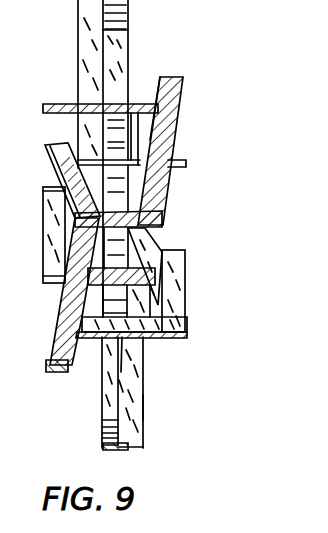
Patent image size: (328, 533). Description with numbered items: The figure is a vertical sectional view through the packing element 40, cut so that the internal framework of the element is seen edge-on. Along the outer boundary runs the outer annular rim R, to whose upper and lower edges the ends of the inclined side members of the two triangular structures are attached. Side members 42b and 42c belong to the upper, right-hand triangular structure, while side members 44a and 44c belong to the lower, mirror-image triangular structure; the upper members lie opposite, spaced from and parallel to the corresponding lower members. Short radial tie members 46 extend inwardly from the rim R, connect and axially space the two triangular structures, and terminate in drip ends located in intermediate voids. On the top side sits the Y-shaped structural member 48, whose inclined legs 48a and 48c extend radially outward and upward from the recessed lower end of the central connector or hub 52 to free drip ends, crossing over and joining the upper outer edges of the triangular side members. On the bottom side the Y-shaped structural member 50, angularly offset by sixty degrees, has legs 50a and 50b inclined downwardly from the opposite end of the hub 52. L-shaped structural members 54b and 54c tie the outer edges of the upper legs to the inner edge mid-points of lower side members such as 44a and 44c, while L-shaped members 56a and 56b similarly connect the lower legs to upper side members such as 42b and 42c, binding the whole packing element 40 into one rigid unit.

The packing element 40 is at (148, 408).
The structural side member 42b is at (80, 6).
The structural side member 42c is at (88, 337).
The structural side member 44a is at (137, 391).
The structural side member 44c is at (143, 104).
The radial tie member 46 is at (113, 55).
The Y-shaped structural member 48 is at (55, 376).
The radial structural member 48a is at (46, 366).
The radial structural member 48c is at (58, 147).
The Y-shaped structural member 50 is at (174, 74).
The radial structural member 50a is at (168, 122).
The radial structural member 50b is at (150, 247).
The central connector or hub 52 is at (130, 218).
The L-shaped structural member 54b is at (50, 103).
The L-shaped structural member 54c is at (44, 220).
The L-shaped structural member 56a is at (187, 162).
The L-shaped structural member 56b is at (183, 323).
The outer annular rim R is at (124, 451).